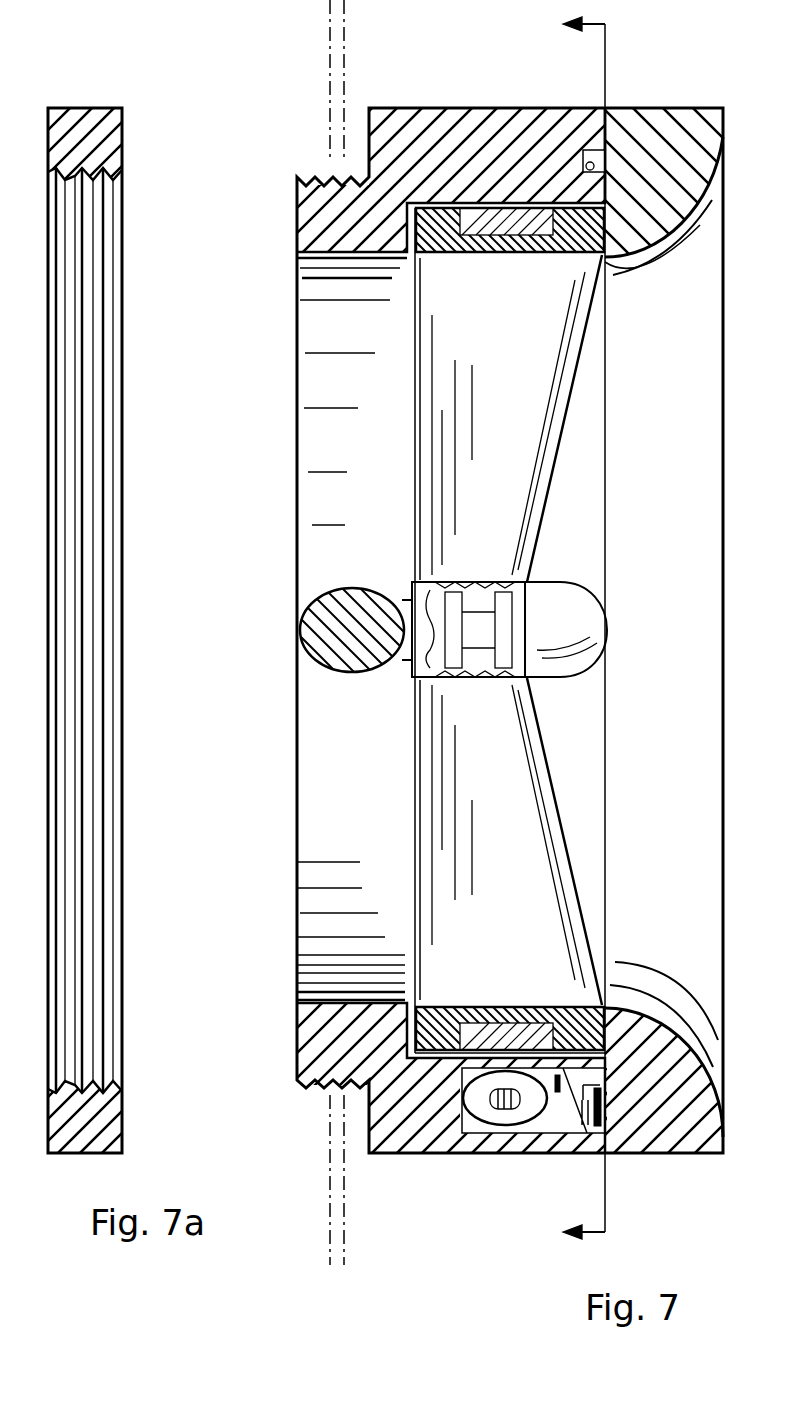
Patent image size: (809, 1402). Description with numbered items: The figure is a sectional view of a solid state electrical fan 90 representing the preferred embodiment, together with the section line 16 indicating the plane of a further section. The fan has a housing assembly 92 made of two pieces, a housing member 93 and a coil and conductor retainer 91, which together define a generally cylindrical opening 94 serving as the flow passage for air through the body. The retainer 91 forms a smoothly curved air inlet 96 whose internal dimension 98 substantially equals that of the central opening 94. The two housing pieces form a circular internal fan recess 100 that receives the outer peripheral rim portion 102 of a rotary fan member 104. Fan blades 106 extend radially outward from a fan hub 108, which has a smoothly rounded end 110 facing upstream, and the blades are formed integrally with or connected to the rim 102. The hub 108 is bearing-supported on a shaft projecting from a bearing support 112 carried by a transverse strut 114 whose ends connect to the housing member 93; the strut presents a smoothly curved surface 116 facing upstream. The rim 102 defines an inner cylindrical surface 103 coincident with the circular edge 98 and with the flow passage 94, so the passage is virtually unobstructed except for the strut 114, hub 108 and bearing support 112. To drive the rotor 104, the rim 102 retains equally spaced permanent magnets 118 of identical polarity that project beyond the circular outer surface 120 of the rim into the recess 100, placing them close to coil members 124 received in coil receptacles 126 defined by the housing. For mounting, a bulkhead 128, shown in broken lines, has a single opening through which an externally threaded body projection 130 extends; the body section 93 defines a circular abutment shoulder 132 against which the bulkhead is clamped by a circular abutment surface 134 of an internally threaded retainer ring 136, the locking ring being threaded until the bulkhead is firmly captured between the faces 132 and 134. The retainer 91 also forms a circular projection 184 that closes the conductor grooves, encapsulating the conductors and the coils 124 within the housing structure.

In FIG. 7, the section line 16 is at (561, 624).
In FIG. 7, the solid state electrical fan 90 is at (633, 100).
In FIG. 7, the coil and conductor retainer 91 is at (688, 118).
In FIG. 7, the housing assembly 92 is at (448, 94).
In FIG. 7, the housing member 93 is at (472, 120).
In FIG. 7, the cylindrical opening 94 is at (337, 260).
In FIG. 7, the air inlet 96 is at (710, 200).
In FIG. 7, the internal dimension 98 is at (655, 250).
In FIG. 7, the fan recess 100 is at (660, 1057).
In FIG. 7, the outer peripheral rim portion 102 is at (583, 990).
In FIG. 7, the inner cylindrical surface 103 is at (500, 1007).
In FIG. 7, the rotary fan member 104 is at (413, 468).
In FIG. 7, the fan blades 106 is at (442, 387).
In FIG. 7, the fan hub 108 is at (577, 617).
In FIG. 7, the smoothly rounded end 110 is at (605, 630).
In FIG. 7, the bearing support 112 is at (410, 590).
In FIG. 7, the transverse strut 114 is at (305, 642).
In FIG. 7, the smoothly curved surface 116 is at (405, 660).
In FIG. 7, the permanent magnets 118 is at (472, 258).
In FIG. 7, the circular outer surface 120 is at (590, 1130).
In FIG. 7, the coil members 124 is at (485, 1108).
In FIG. 7, the coil receptacles 126 is at (550, 1120).
In FIG. 7, the bulkhead 128 is at (340, 42).
In FIG. 7, the externally threaded body projection 130 is at (297, 235).
In FIG. 7, the circular abutment shoulder 132 is at (368, 163).
In FIG. 7A, the circular abutment surface 134 is at (123, 112).
In FIG. 7A, the internally threaded retainer ring 136 is at (108, 110).
In FIG. 7, the circular projection 184 is at (600, 1100).